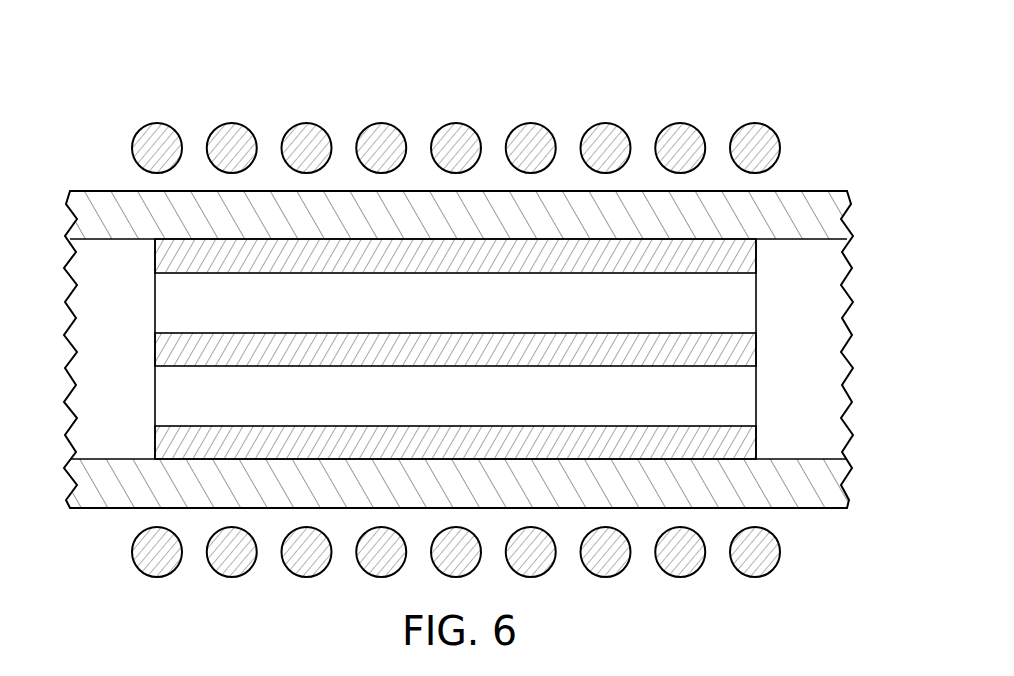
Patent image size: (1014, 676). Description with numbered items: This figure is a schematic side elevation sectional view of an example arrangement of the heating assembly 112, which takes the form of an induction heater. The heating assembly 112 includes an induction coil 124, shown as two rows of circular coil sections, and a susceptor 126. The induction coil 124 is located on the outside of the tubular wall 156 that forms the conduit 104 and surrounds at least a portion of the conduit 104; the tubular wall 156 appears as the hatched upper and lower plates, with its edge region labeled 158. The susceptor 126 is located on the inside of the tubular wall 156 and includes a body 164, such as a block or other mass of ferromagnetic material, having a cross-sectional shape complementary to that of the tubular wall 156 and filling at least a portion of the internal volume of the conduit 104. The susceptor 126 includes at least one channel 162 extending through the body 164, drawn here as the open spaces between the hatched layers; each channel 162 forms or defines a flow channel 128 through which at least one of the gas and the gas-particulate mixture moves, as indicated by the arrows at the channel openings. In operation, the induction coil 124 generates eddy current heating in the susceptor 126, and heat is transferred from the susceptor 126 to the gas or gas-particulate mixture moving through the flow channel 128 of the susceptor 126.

The heating assembly 112 is at (805, 97).
The conduit 104 is at (815, 190).
The induction coil 124 is at (157, 123).
The susceptor 126 is at (146, 272).
The flow channel 128 is at (722, 305).
The tubular wall 156 is at (851, 218).
The plate edge 158 is at (96, 190).
The channel 162 is at (568, 333).
The body 164 is at (155, 352).